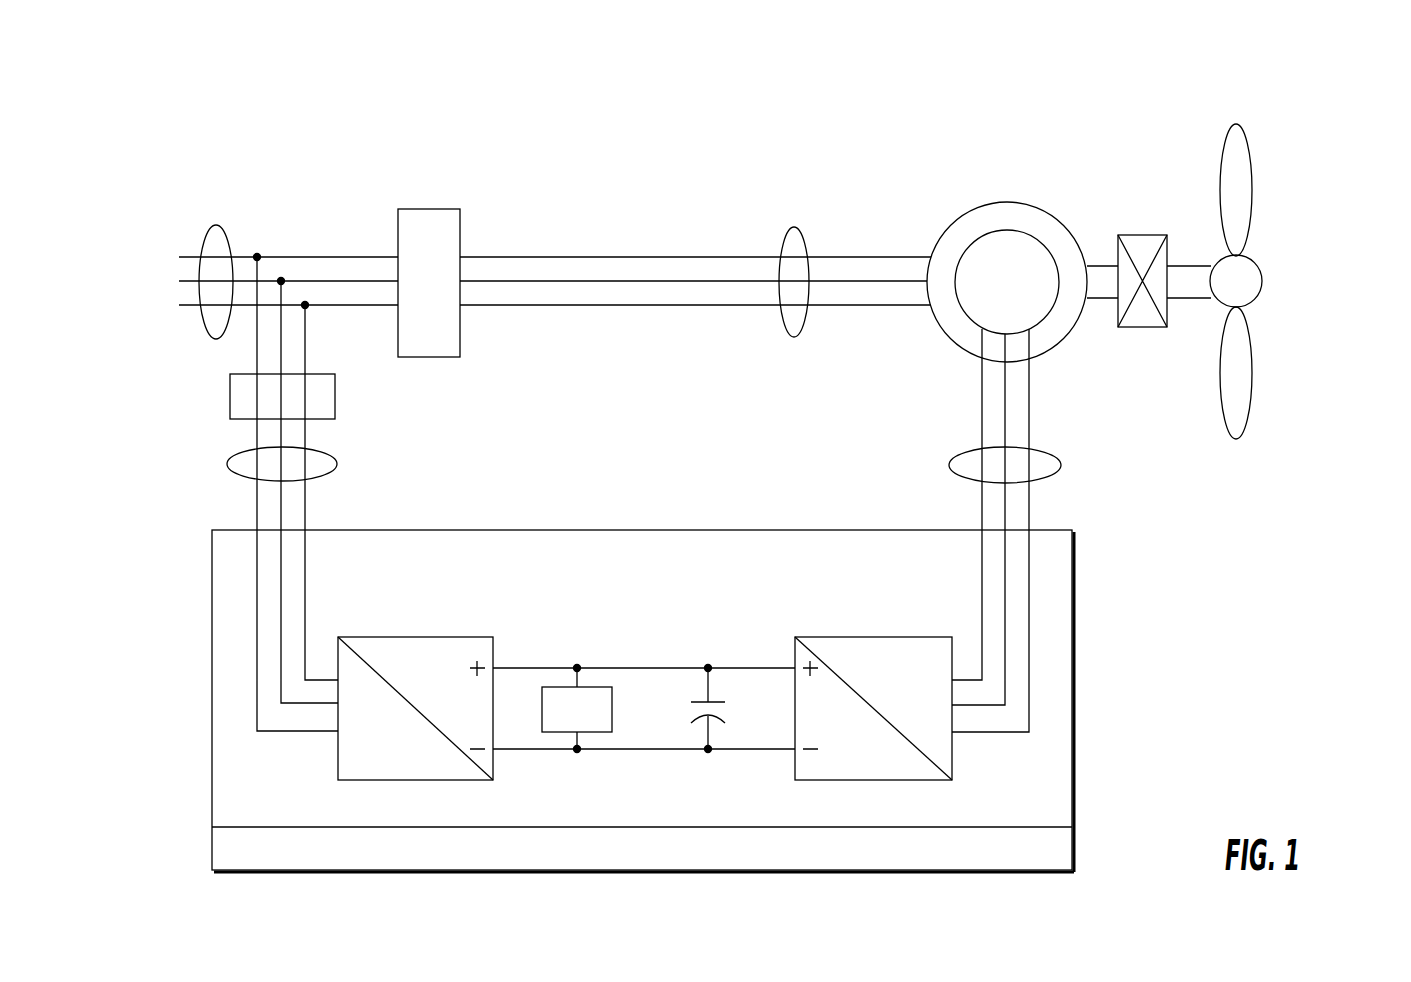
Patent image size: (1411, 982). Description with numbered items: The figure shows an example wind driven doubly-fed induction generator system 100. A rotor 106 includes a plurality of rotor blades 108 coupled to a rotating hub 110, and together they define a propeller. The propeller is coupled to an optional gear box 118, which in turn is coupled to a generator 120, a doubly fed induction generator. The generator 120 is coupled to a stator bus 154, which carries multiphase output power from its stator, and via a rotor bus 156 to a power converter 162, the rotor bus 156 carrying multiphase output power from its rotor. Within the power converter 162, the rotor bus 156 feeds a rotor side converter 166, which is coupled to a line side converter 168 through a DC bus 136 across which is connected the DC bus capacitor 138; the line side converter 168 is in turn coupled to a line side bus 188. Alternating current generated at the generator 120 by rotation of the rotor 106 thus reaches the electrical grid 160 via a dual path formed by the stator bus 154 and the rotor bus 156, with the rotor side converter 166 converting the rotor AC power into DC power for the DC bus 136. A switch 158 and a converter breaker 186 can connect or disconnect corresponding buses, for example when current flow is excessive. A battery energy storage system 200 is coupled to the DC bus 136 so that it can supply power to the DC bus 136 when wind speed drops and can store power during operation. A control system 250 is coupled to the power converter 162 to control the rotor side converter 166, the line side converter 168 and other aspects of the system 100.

The wind driven doubly-fed induction generator system 100 is at (552, 146).
The rotor 106 is at (1322, 123).
The rotor blades 108 is at (1240, 212).
The rotating hub 110 is at (1262, 283).
The gear box 118 is at (1140, 235).
The generator 120 is at (1000, 204).
The DC bus 136 is at (730, 668).
The DC bus capacitor 138 is at (698, 718).
The stator bus 154 is at (794, 227).
The rotor bus 156 is at (1062, 465).
The switch 158 is at (430, 209).
The electrical grid 160 is at (216, 225).
The power converter 162 is at (1073, 600).
The rotor side converter 166 is at (952, 755).
The line side converter 168 is at (338, 755).
The converter breaker 186 is at (230, 390).
The line side bus 188 is at (226, 464).
The battery energy storage system 200 is at (597, 687).
The control system 250 is at (1073, 843).